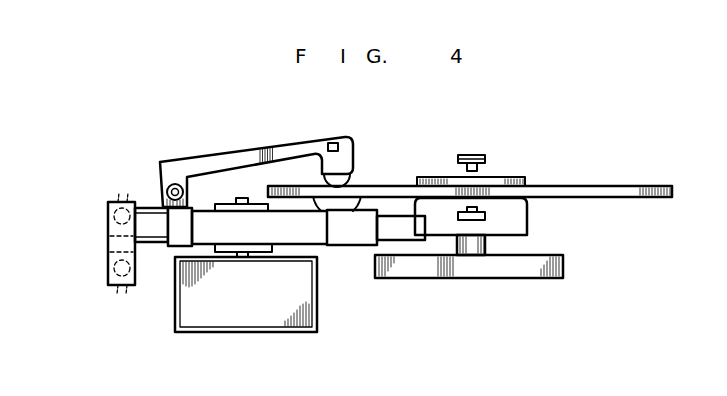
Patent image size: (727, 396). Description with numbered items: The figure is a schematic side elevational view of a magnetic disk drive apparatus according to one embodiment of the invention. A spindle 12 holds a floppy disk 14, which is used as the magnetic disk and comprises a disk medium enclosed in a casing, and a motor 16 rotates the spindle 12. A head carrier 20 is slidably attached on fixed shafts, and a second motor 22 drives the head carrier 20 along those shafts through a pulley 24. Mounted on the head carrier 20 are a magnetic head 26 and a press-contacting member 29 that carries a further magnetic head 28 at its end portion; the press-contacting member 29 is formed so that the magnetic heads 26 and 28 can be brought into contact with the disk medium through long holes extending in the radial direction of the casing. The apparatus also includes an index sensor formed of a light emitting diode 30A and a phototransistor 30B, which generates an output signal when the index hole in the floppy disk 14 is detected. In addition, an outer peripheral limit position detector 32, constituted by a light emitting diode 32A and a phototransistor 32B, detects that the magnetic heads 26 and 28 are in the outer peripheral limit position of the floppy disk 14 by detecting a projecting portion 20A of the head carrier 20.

The spindle 12 is at (514, 212).
The floppy disk 14 is at (615, 186).
The motor 16 is at (520, 273).
The head carrier 20 is at (343, 246).
The projecting portion 20A is at (150, 246).
The motor 22 is at (250, 320).
The pulley 24 is at (229, 205).
The magnetic head 26 is at (350, 208).
The magnetic head 28 is at (327, 182).
The press-contacting member 29 is at (317, 143).
The light emitting diode 30A is at (487, 219).
The phototransistor 30B is at (486, 160).
The outer peripheral limit position detector 32 is at (100, 248).
The light emitting diode 32A is at (111, 270).
The phototransistor 32B is at (113, 213).